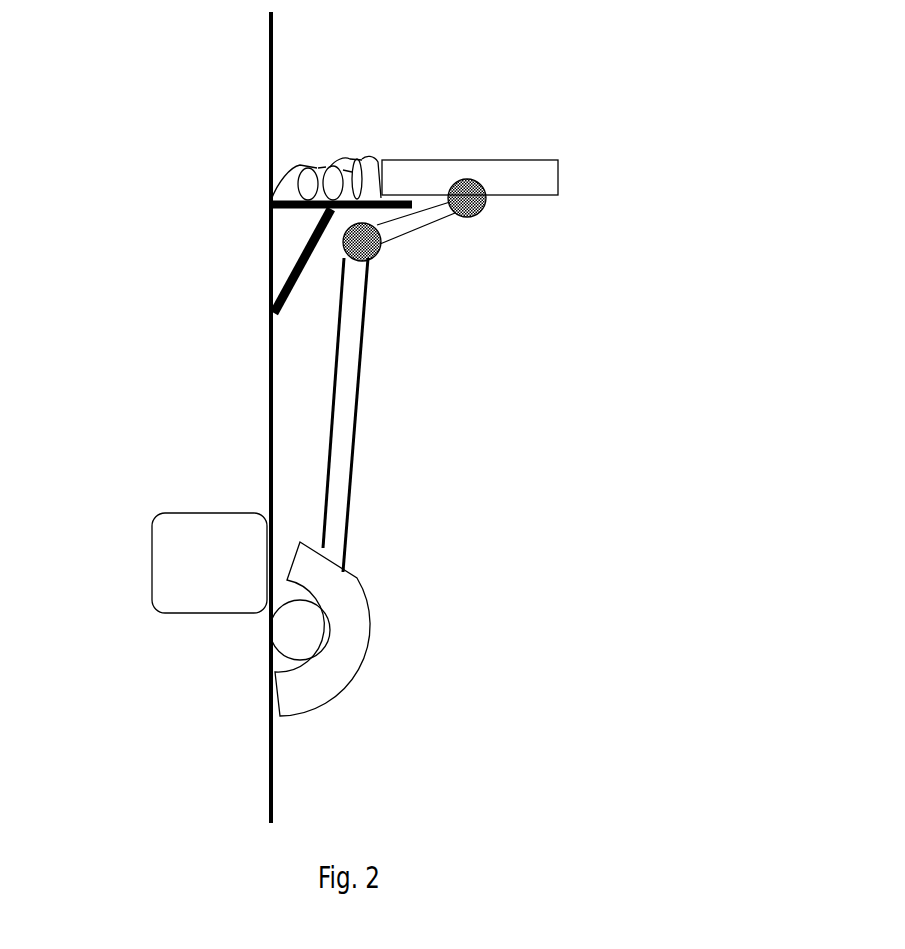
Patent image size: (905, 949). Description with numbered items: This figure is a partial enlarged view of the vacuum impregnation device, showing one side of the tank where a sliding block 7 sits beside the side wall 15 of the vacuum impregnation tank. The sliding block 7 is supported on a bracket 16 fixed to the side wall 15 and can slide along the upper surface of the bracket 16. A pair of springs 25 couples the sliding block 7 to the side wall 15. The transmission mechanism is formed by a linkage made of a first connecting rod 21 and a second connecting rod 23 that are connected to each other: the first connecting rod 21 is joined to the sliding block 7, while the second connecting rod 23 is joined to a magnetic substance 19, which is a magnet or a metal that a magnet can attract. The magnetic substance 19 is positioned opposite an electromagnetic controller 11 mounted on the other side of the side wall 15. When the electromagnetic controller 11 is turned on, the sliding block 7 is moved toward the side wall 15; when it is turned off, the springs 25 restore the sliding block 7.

The sliding block 7 is at (507, 168).
The electromagnetic controller 11 is at (207, 523).
The side wall 15 is at (262, 57).
The bracket 16 is at (300, 210).
The magnetic substance 19 is at (352, 633).
The first connecting rod 21 is at (408, 223).
The second connecting rod 23 is at (340, 445).
The springs 25 is at (318, 168).